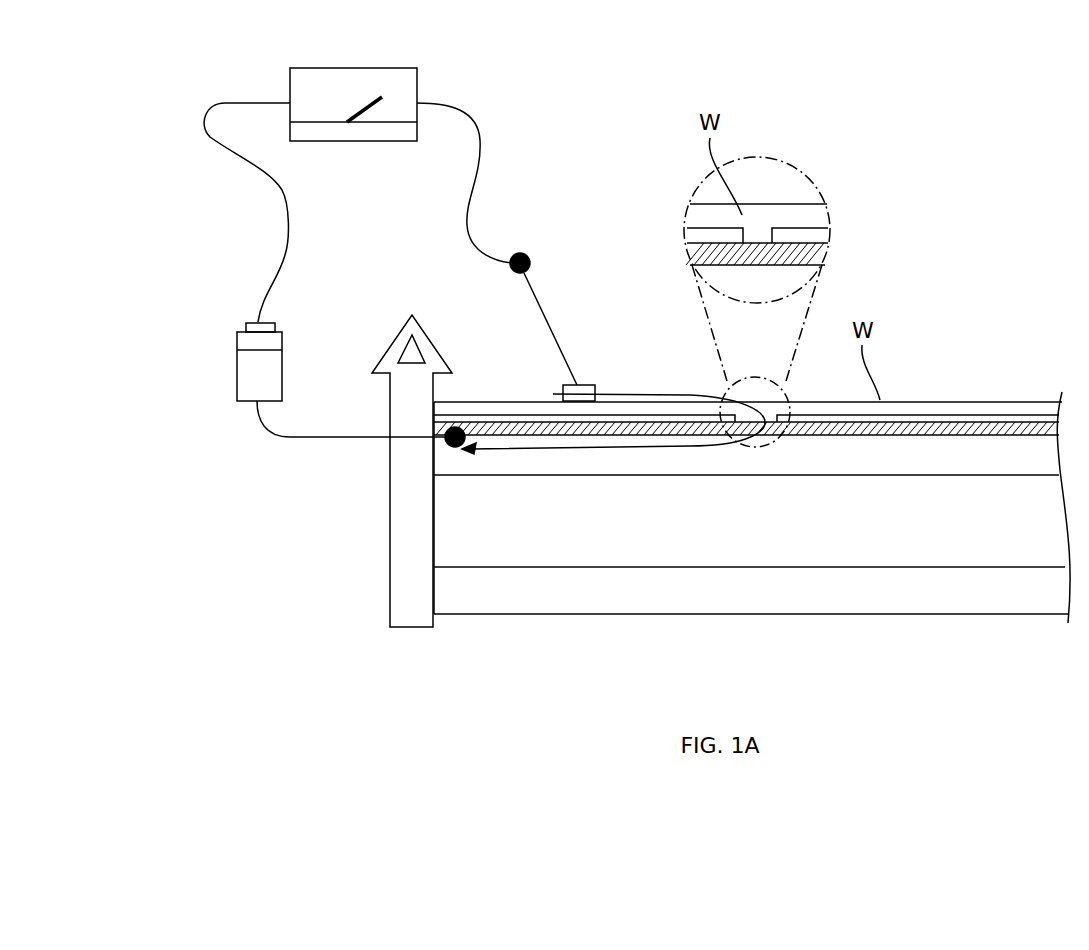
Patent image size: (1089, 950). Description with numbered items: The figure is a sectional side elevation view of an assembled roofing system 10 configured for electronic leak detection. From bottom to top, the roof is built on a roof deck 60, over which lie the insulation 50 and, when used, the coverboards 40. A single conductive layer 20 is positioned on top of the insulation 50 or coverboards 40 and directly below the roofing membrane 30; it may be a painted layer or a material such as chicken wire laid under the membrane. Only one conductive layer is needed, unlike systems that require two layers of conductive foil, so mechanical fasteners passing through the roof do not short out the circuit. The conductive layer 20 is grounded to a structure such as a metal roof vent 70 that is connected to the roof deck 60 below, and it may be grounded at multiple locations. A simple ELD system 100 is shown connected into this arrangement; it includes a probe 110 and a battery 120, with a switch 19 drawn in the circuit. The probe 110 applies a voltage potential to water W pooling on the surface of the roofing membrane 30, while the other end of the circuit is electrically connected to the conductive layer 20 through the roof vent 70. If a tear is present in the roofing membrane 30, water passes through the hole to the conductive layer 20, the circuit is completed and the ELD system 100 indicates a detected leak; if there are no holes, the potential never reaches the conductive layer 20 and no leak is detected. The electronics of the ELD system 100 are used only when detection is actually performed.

The roofing system 10 is at (914, 121).
The switch 19 is at (405, 90).
The conductive layer 20 is at (955, 416).
The roofing membrane 30 is at (1040, 413).
The coverboards 40 is at (997, 455).
The insulation 50 is at (523, 548).
The roof deck 60 is at (915, 588).
The metal roof vent 70 is at (405, 503).
The ELD system 100 is at (353, 68).
The probe 110 is at (553, 332).
The battery 120 is at (248, 362).